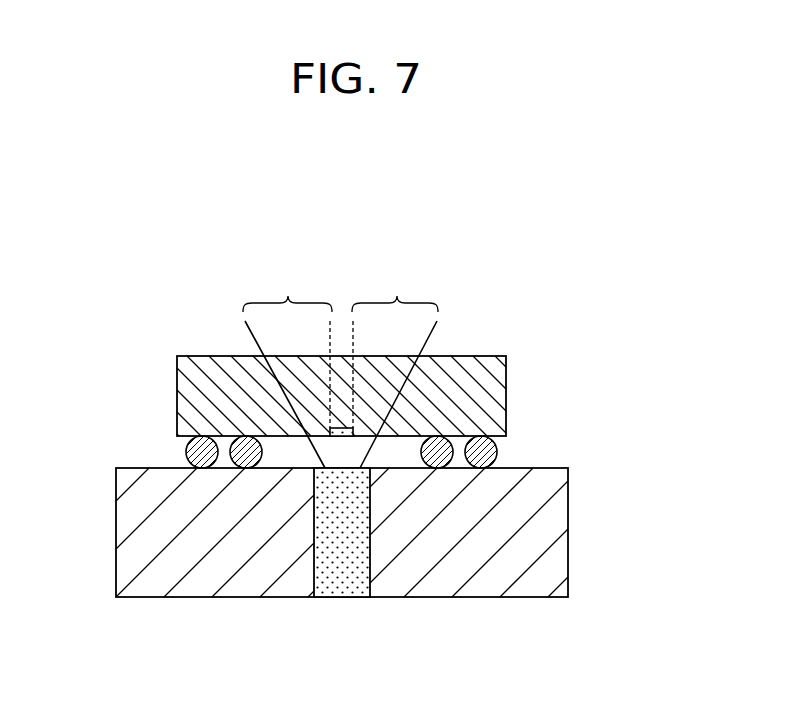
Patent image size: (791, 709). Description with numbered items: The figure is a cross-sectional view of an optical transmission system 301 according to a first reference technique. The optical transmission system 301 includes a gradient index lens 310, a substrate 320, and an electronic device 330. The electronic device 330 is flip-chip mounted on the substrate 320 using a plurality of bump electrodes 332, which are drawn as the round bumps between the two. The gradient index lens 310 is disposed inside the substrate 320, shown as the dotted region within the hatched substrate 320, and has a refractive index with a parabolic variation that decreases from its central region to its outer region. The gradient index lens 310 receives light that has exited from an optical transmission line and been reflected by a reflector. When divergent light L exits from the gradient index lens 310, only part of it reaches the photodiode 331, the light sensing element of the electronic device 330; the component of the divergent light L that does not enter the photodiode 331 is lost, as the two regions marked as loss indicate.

The optical transmission system 301 is at (124, 269).
The gradient index lens 310 is at (333, 598).
The substrate 320 is at (465, 598).
The electronic device 330 is at (177, 374).
The photodiode 331 is at (342, 428).
The bump electrodes 332 is at (187, 456).
The divergent light L is at (430, 337).